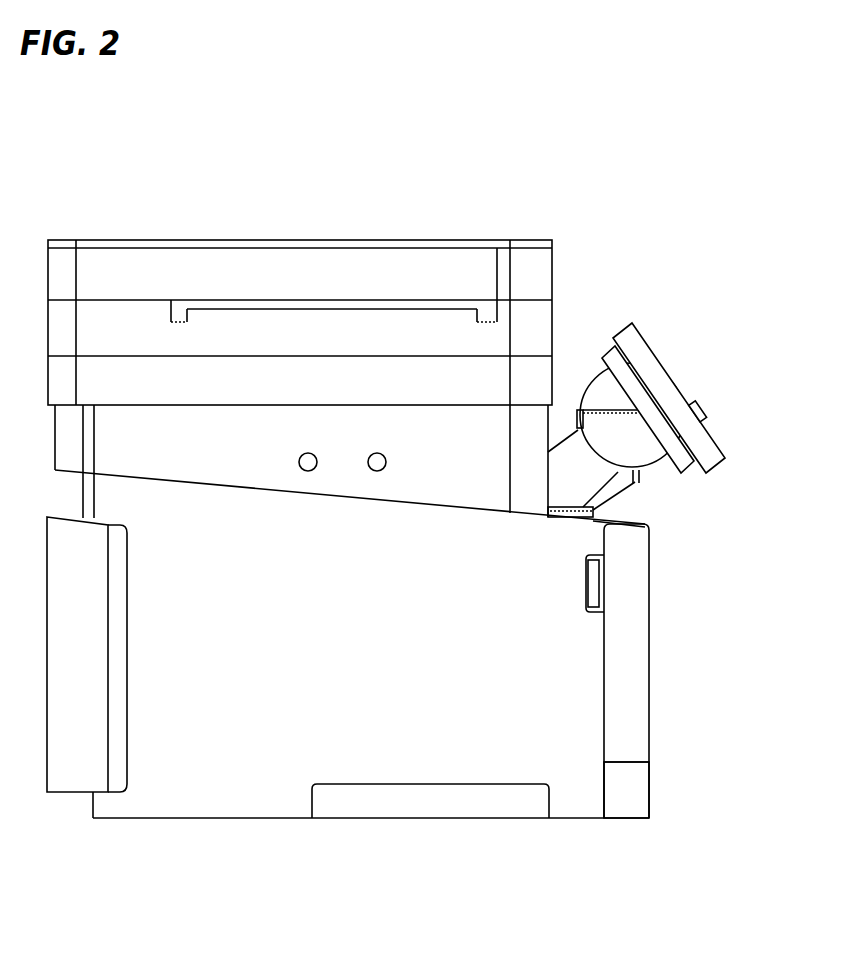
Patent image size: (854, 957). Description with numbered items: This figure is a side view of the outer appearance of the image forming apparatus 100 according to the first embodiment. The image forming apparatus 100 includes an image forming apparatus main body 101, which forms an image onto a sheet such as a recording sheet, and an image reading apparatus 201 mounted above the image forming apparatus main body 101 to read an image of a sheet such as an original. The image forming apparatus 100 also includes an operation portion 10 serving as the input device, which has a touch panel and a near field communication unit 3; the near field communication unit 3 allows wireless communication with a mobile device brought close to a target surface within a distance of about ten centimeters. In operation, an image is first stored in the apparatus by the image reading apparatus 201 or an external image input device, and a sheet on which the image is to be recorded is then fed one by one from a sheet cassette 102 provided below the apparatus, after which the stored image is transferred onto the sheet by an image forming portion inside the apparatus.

The image forming apparatus 100 is at (550, 211).
The image reading apparatus 201 is at (385, 273).
The operation portion 10 is at (653, 365).
The near field communication unit 3 is at (703, 417).
The image forming apparatus main body 101 is at (592, 585).
The sheet cassette 102 is at (637, 789).